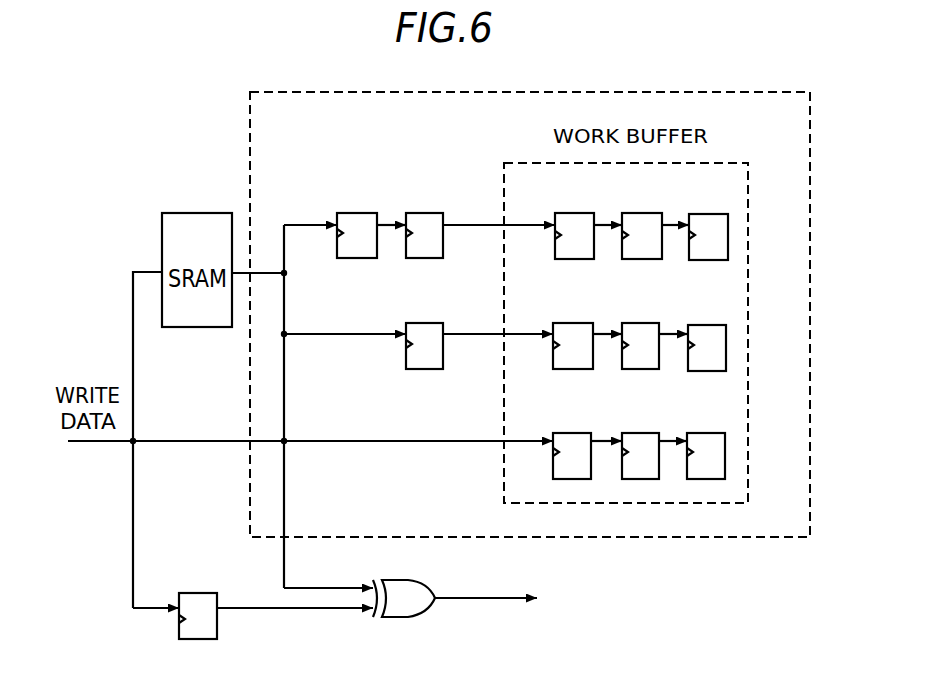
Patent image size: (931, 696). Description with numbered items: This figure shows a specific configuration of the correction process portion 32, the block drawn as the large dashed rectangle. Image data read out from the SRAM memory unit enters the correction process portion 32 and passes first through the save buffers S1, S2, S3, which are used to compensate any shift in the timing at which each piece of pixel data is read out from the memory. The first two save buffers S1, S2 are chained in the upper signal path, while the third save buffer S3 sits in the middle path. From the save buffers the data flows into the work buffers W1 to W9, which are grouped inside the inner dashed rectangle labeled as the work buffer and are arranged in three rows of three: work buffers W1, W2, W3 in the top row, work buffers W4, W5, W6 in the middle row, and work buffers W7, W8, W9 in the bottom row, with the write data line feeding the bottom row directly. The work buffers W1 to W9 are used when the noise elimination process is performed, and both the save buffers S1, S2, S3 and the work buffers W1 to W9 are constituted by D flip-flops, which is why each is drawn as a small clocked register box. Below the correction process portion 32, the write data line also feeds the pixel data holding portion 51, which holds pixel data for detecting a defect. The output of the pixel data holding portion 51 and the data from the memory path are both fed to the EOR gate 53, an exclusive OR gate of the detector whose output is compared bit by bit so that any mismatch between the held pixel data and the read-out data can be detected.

The correction process portion 32 is at (622, 92).
The save buffer S1 is at (348, 217).
The save buffer S2 is at (426, 217).
The save buffer S3 is at (421, 328).
The work buffer W1 is at (570, 218).
The work buffer W2 is at (639, 218).
The work buffer W3 is at (702, 218).
The work buffer W4 is at (567, 329).
The work buffer W5 is at (630, 329).
The work buffer W6 is at (699, 331).
The work buffer W7 is at (565, 438).
The work buffer W8 is at (634, 438).
The work buffer W9 is at (697, 438).
The pixel data holding portion 51 is at (190, 602).
The EOR gate 53 is at (412, 592).